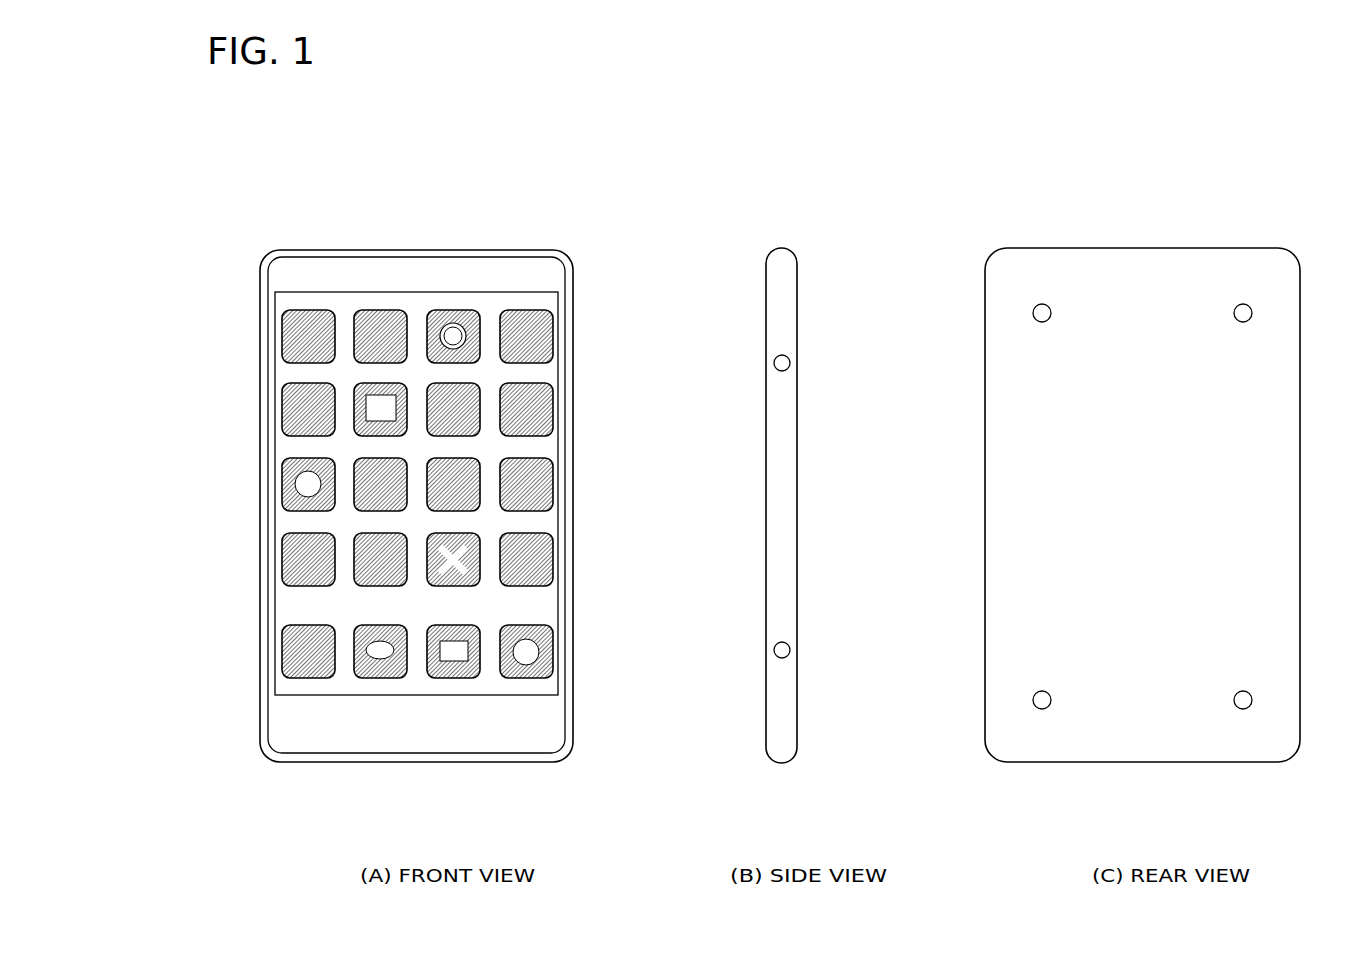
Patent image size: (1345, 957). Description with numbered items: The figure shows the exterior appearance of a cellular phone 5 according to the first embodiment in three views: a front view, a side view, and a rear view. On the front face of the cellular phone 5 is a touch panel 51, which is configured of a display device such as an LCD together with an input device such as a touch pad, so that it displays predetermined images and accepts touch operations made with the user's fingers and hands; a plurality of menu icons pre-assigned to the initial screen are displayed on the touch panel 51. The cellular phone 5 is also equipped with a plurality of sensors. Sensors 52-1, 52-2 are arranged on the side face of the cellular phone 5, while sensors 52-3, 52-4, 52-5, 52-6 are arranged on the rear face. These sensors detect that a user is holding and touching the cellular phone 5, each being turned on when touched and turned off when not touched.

The cellular phone 5 is at (318, 184).
The touch panel 51 is at (380, 300).
The sensor 52-1 is at (782, 355).
The sensor 52-2 is at (779, 659).
The sensor 52-3 is at (1041, 303).
The sensor 52-4 is at (1242, 303).
The sensor 52-5 is at (1042, 709).
The sensor 52-6 is at (1242, 709).